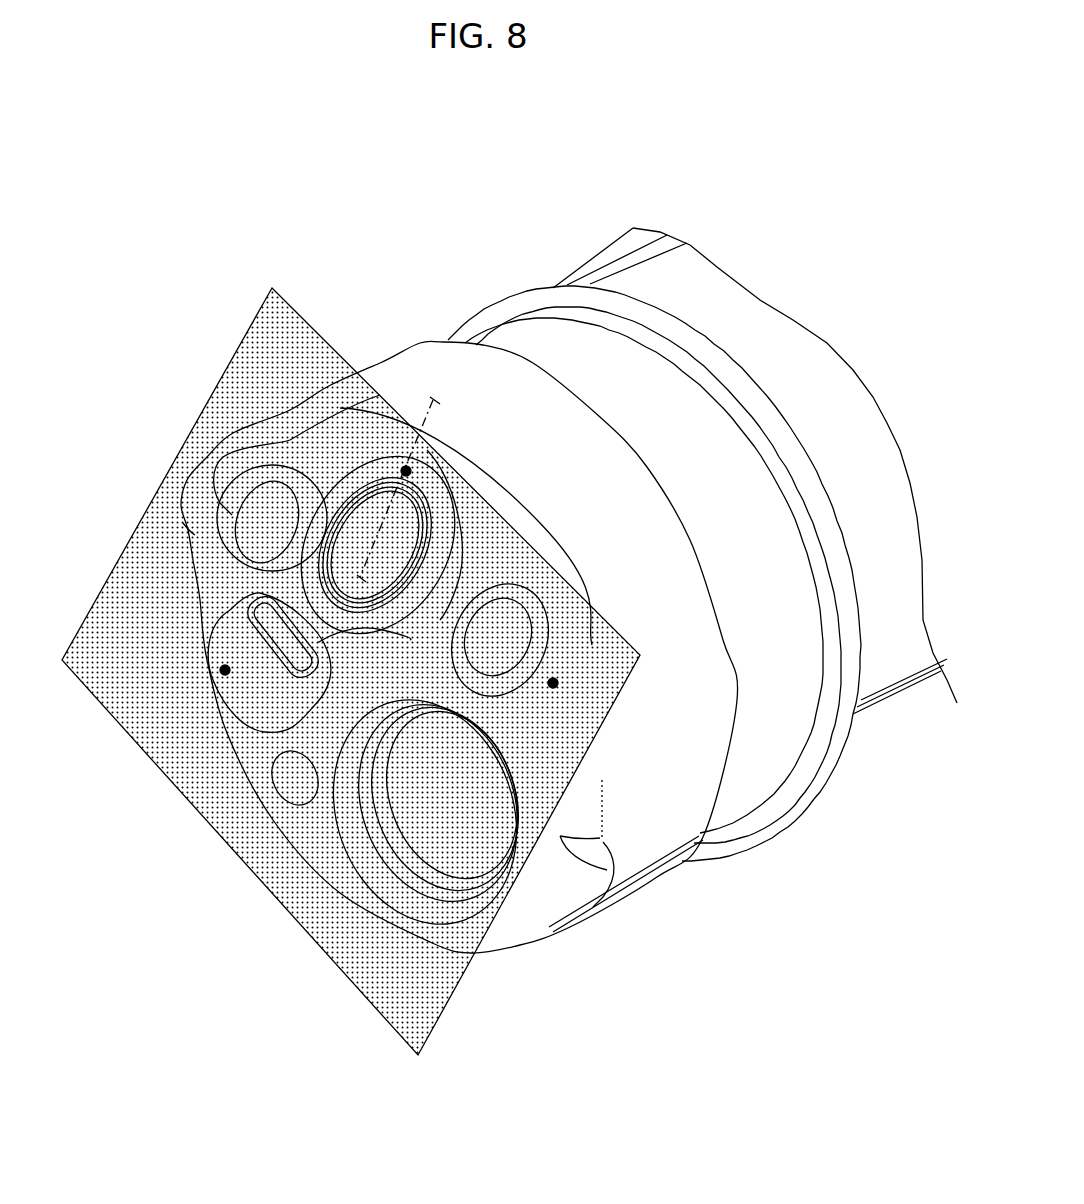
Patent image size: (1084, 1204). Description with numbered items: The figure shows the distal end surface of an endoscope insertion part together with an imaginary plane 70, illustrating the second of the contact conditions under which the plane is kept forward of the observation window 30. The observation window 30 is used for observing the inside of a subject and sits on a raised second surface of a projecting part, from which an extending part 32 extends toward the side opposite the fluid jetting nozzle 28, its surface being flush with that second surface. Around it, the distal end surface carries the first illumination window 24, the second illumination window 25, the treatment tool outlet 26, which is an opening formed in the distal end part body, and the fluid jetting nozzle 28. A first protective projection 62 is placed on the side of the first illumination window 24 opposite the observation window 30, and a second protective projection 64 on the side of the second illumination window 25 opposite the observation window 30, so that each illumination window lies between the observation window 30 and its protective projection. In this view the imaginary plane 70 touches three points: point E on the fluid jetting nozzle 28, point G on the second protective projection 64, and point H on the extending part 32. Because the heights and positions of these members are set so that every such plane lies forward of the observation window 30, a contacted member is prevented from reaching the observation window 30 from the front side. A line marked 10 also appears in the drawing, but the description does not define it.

The imaginary plane 70 is at (265, 335).
The observation window 30 is at (357, 433).
The point H is at (405, 466).
The extending part 32 is at (435, 490).
The first protective projection 62 is at (197, 473).
The first illumination window 24 is at (253, 518).
The axis 10 is at (449, 413).
The second illumination window 25 is at (513, 640).
The point G is at (553, 683).
The point E is at (225, 670).
The fluid jetting nozzle 28 is at (257, 703).
The second protective projection 64 is at (603, 780).
The treatment tool outlet 26 is at (473, 847).